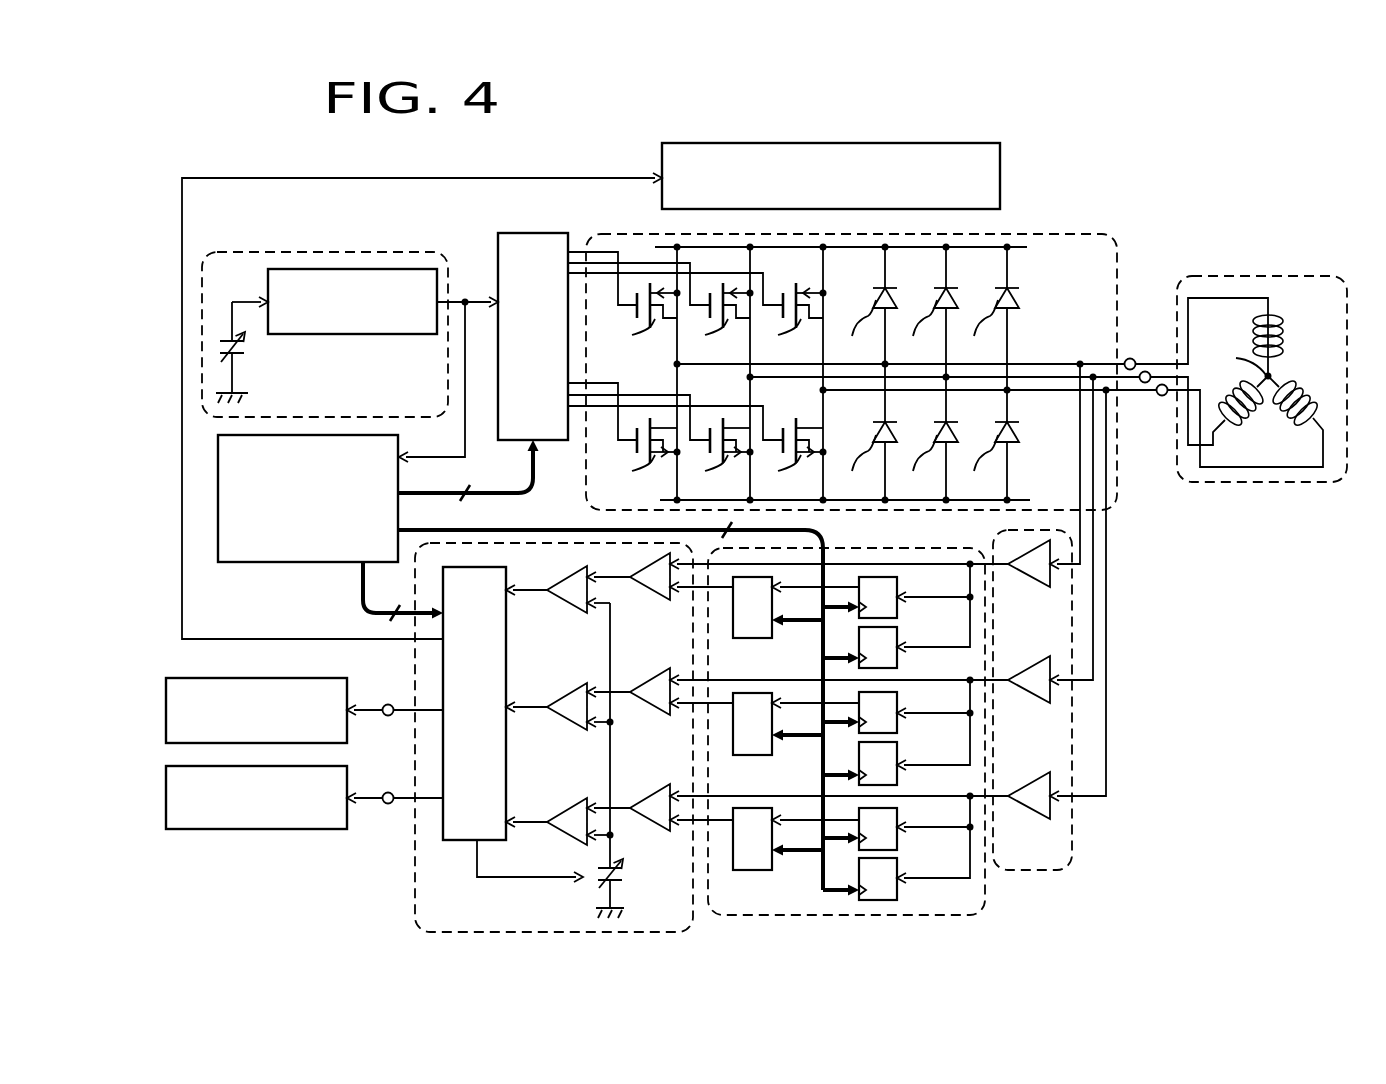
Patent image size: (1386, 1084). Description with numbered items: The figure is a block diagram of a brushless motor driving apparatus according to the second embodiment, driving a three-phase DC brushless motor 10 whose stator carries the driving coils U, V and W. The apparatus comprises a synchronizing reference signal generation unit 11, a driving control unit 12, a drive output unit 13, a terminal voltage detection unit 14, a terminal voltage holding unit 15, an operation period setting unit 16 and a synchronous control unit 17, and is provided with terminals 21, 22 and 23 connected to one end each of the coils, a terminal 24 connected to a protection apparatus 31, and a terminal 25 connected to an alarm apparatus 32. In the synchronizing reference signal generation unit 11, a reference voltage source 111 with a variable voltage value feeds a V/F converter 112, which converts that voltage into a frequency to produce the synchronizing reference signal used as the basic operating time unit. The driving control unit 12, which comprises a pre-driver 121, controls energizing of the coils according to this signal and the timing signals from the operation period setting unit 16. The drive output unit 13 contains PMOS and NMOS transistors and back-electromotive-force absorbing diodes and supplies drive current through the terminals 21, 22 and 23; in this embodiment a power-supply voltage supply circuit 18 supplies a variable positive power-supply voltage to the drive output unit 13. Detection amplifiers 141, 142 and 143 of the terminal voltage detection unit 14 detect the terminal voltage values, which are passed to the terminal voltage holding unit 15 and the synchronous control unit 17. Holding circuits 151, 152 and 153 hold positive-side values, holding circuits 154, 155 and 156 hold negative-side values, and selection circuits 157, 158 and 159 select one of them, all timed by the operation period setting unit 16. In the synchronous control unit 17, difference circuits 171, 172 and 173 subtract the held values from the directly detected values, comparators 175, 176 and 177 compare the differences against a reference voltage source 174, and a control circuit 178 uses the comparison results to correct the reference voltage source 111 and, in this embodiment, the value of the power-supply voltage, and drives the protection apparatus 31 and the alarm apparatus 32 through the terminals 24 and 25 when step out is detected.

The three-phase DC brushless motor 10 is at (1250, 490).
The synchronizing reference signal generation unit 11 is at (250, 247).
The reference voltage source 111 is at (247, 347).
The V/F converter 112 is at (403, 334).
The driving control unit 12 is at (573, 233).
The pre-driver 121 is at (497, 258).
The drive output unit 13 is at (1085, 232).
The terminal voltage detection unit 14 is at (1073, 848).
The detection amplifier 141 is at (1027, 588).
The detection amplifier 142 is at (1027, 704).
The detection amplifier 143 is at (1027, 820).
The terminal voltage holding unit 15 is at (877, 546).
The holding circuit 151 is at (898, 583).
The holding circuit 152 is at (898, 698).
The holding circuit 153 is at (898, 814).
The holding circuit 154 is at (898, 633).
The holding circuit 155 is at (898, 748).
The holding circuit 156 is at (898, 864).
The selection circuit 157 is at (745, 639).
The selection circuit 158 is at (745, 756).
The selection circuit 159 is at (745, 871).
The operation period setting unit 16 is at (288, 563).
The synchronous control unit 17 is at (412, 909).
The difference circuit 171 is at (652, 601).
The difference circuit 172 is at (652, 716).
The difference circuit 173 is at (652, 832).
The reference voltage source 174 is at (628, 878).
The comparator 175 is at (562, 614).
The comparator 176 is at (562, 731).
The comparator 177 is at (562, 846).
The control circuit 178 is at (450, 841).
The power-supply voltage supply circuit 18 is at (1001, 181).
The terminal 21 is at (1130, 358).
The terminal 22 is at (1146, 371).
The terminal 23 is at (1162, 396).
The terminal 24 is at (388, 716).
The terminal 25 is at (388, 804).
The protection apparatus 31 is at (347, 683).
The alarm apparatus 32 is at (288, 830).